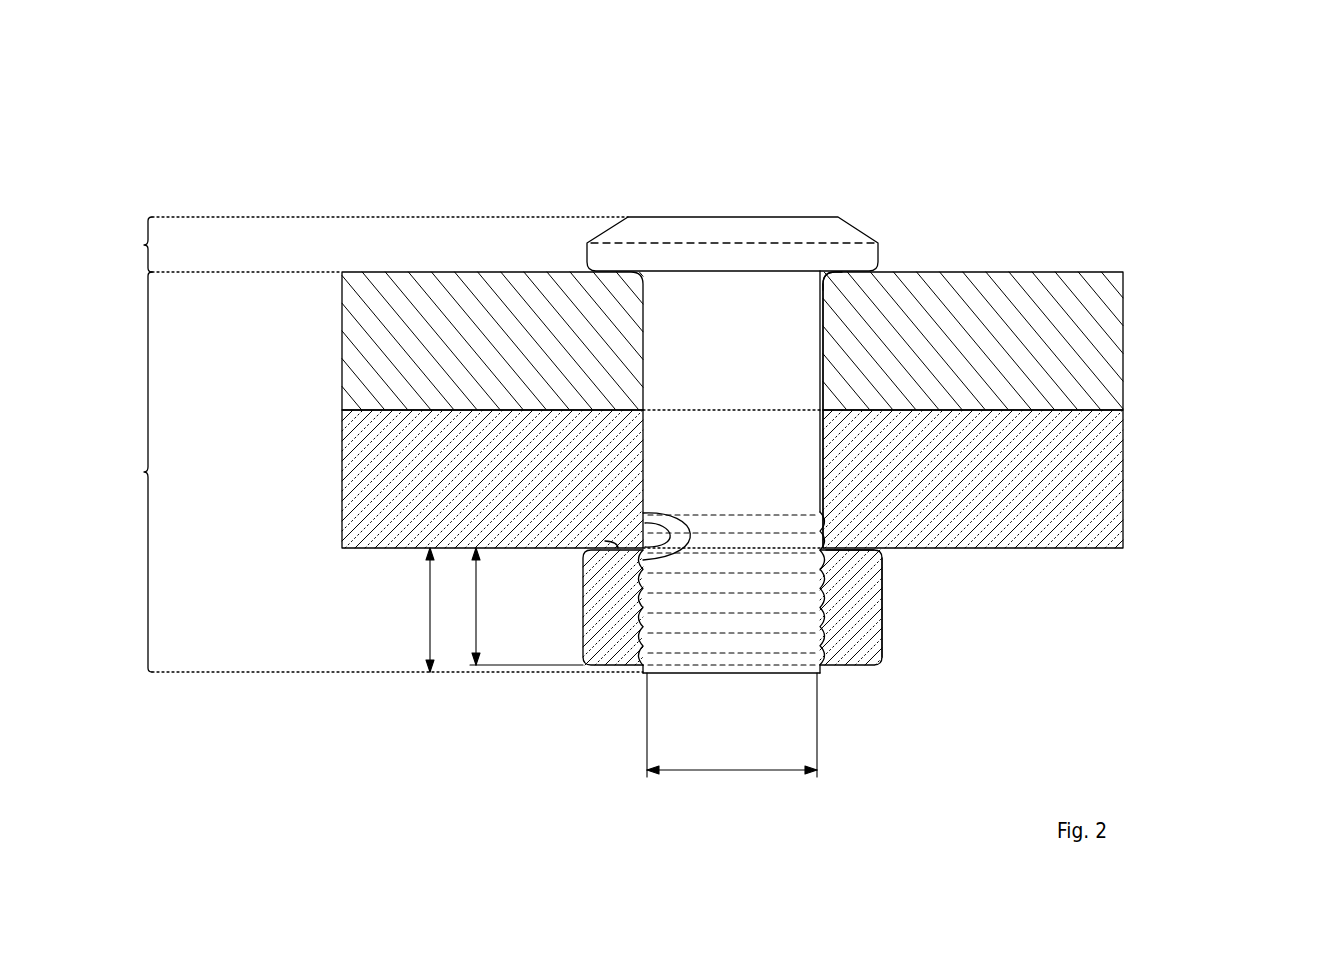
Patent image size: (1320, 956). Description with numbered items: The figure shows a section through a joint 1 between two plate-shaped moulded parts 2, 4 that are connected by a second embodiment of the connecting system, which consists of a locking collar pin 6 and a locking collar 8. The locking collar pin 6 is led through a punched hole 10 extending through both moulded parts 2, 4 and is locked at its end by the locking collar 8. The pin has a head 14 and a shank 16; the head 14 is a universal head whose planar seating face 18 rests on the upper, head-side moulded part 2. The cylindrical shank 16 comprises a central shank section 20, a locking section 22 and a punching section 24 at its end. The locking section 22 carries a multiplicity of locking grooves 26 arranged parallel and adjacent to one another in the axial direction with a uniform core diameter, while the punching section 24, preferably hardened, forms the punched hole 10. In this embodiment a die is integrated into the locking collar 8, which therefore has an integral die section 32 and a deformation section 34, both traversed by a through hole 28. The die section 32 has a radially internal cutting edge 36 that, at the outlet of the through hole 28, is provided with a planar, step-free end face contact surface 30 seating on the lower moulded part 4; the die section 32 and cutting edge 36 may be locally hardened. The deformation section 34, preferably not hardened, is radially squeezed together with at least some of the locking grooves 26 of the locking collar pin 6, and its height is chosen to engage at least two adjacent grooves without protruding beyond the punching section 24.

The joint 1 is at (330, 148).
The moulded part 2 is at (1087, 295).
The moulded part 4 is at (1087, 448).
The locking collar pin 6 is at (862, 228).
The locking collar 8 is at (897, 612).
The punched hole 10 is at (818, 322).
The head 14 is at (369, 244).
The shank 16 is at (465, 472).
The seating face 18 is at (858, 273).
The central shank section 20 is at (835, 432).
The locking section 22 is at (839, 571).
The punching section 24 is at (837, 676).
The locking grooves 26 is at (783, 623).
The through hole 28 is at (643, 513).
The end face contact surface 30 is at (605, 541).
The die section 32 is at (870, 558).
The deformation section 34 is at (872, 593).
The cutting edge 36 is at (645, 523).